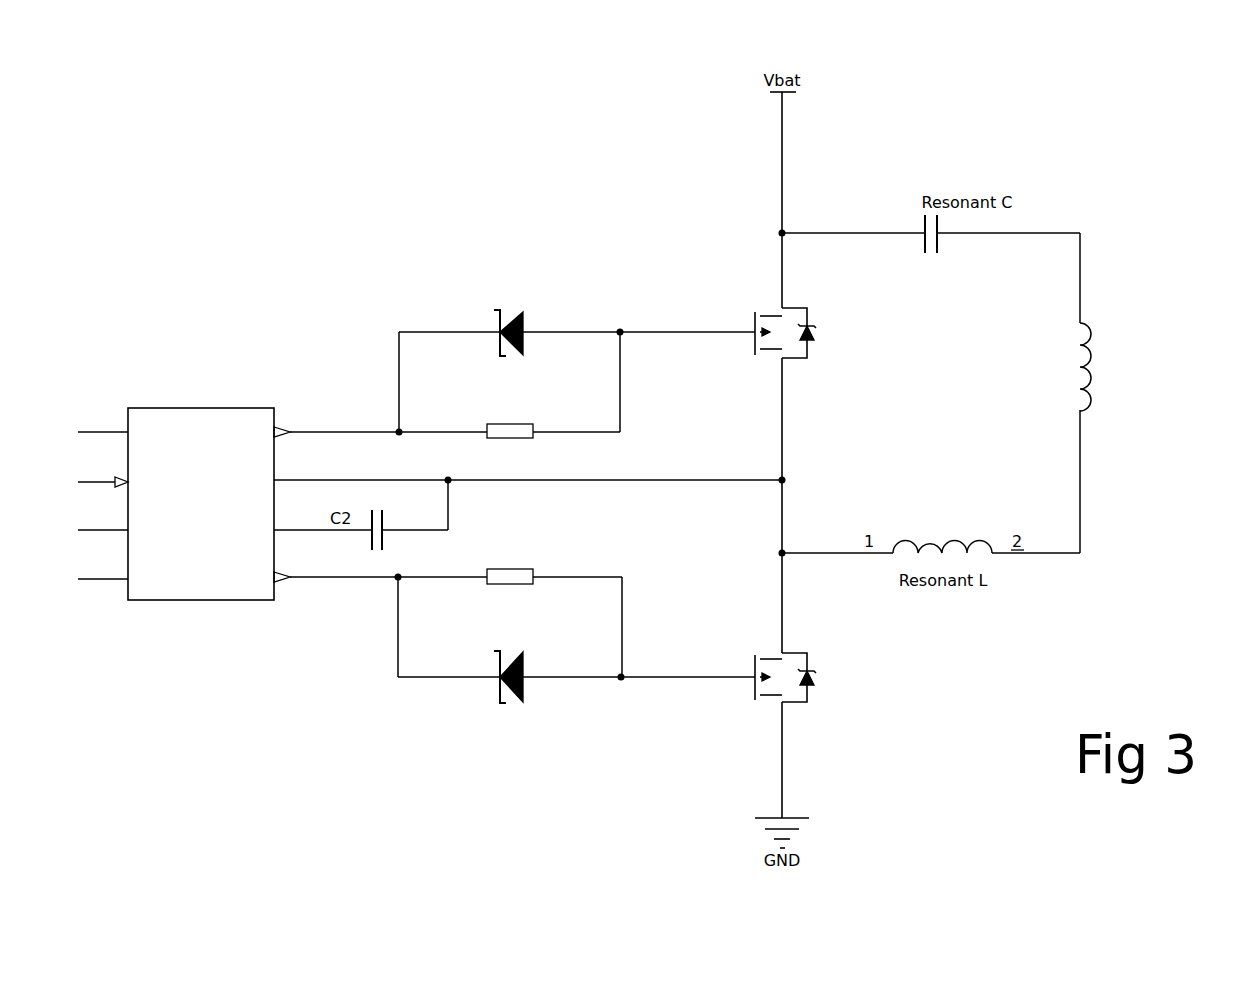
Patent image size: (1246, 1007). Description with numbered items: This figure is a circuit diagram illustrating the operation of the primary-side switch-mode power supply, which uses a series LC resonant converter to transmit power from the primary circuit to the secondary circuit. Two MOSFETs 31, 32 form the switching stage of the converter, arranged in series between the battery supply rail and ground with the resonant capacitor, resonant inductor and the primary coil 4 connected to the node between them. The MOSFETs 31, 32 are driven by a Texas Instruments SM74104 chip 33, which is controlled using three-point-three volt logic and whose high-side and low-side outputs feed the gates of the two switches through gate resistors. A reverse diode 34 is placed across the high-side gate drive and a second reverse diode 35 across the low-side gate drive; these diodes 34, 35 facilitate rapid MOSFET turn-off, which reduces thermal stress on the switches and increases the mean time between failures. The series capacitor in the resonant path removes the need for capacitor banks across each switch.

The primary coil 4 is at (1091, 355).
The MOSFET 31 is at (755, 691).
The MOSFET 32 is at (755, 313).
The SM74104 chip 33 is at (207, 433).
The reverse diode 34 is at (499, 313).
The reverse diode 35 is at (523, 703).